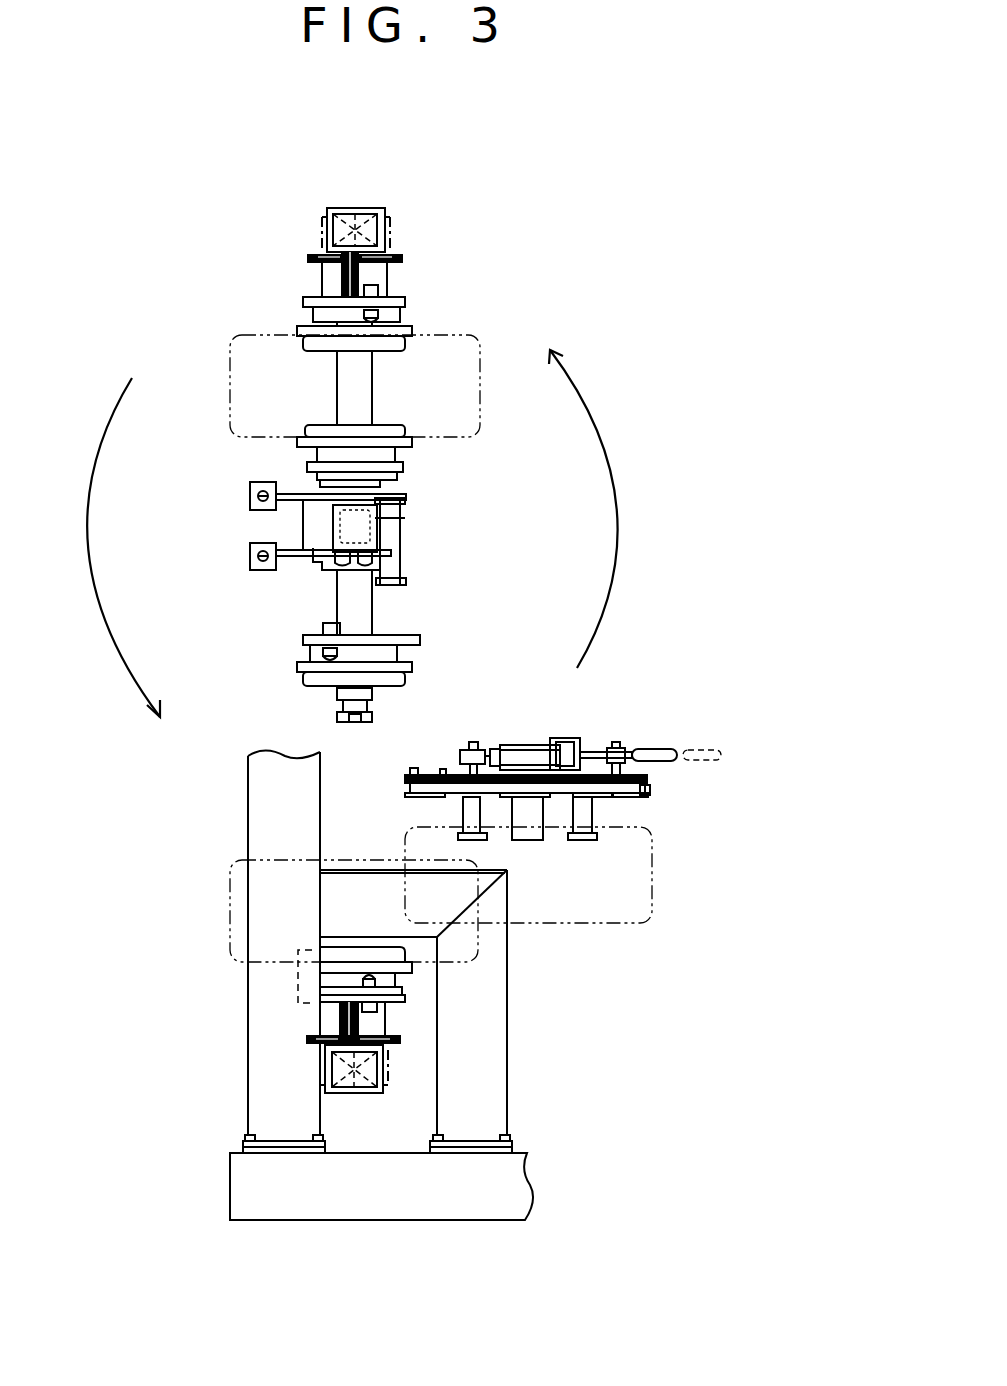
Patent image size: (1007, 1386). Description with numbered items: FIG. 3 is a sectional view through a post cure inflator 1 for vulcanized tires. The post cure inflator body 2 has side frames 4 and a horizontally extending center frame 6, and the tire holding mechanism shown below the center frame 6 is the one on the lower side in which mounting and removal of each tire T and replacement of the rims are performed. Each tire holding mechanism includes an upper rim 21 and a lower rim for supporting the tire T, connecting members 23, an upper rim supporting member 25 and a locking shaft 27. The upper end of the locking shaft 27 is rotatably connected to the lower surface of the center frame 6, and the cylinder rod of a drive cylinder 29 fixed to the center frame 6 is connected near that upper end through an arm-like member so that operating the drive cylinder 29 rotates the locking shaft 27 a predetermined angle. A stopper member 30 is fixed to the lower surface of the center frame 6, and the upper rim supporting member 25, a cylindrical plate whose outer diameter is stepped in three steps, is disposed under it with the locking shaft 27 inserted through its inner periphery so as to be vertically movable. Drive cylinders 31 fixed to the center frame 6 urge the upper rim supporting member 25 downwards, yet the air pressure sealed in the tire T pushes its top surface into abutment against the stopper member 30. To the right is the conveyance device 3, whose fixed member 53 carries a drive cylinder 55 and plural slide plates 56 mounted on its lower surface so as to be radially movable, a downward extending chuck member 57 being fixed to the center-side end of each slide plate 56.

The processing apparatus 1 is at (100, 130).
The post cure inflator body 2 is at (190, 185).
The conveyance device 3 is at (660, 690).
The side frame 4 is at (262, 806).
The center frame 6 is at (297, 502).
The upper rim 21 is at (323, 430).
The connecting member 23 is at (385, 455).
The upper rim supporting member 25 is at (397, 475).
The locking shaft 27 is at (365, 390).
The drive cylinder 29 is at (250, 496).
The stopper member 30 is at (330, 562).
The drive cylinder 31 is at (395, 538).
The fixed member 53 is at (645, 780).
The drive cylinder 55 is at (522, 750).
The slide plate 56 is at (640, 797).
The chuck member 57 is at (590, 815).
The tire T is at (480, 360).